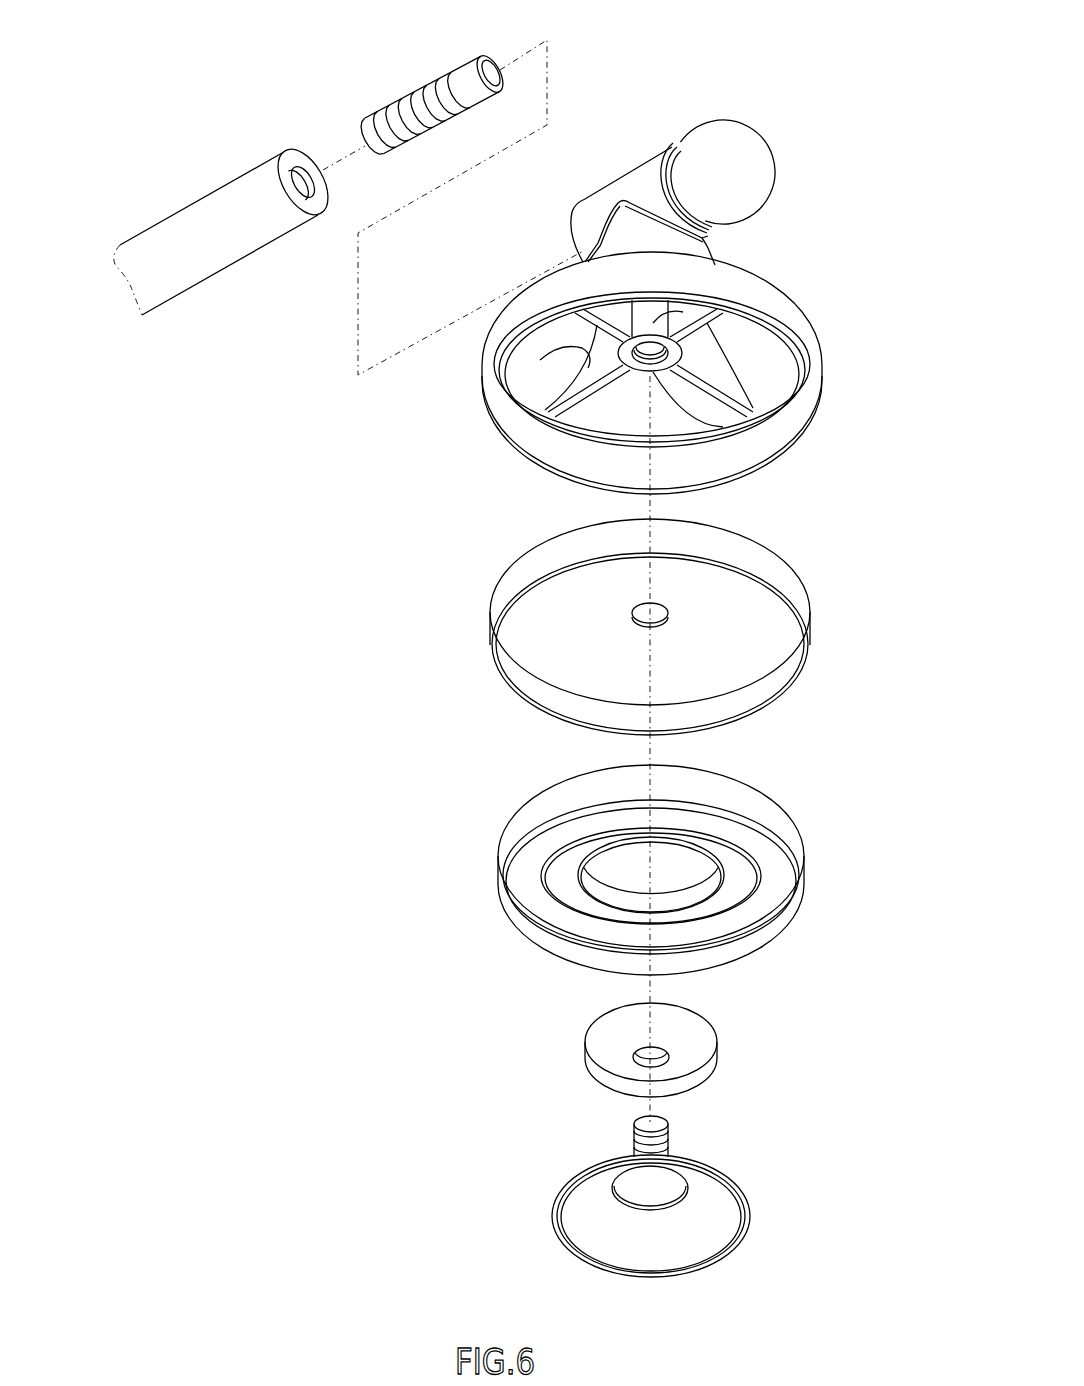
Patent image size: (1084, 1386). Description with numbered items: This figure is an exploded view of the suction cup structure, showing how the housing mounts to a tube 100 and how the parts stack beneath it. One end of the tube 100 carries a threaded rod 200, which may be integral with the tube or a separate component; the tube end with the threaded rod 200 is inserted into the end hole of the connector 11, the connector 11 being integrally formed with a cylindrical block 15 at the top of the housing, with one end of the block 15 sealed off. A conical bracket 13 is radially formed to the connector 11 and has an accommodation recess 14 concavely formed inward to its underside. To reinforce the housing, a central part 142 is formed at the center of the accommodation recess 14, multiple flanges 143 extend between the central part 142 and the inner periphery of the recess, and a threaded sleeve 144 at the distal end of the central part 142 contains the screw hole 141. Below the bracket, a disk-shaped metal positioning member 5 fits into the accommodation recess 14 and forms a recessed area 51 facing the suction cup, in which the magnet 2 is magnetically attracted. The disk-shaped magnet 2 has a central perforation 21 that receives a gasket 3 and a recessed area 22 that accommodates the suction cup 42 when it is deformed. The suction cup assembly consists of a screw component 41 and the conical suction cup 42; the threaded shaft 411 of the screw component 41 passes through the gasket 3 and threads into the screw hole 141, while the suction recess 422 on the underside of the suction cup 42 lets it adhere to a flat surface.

The tube 100 is at (213, 202).
The threaded rod 200 is at (412, 105).
The connector 11 is at (683, 102).
The cylindrical block 15 is at (642, 172).
The conical bracket 13 is at (626, 407).
The accommodation recess 14 is at (534, 470).
The screw hole 141 is at (705, 405).
The central part 142 is at (688, 314).
The flanges 143 is at (578, 350).
The threaded sleeve 144 is at (723, 427).
The positioning member 5 is at (597, 650).
The recessed area 51 is at (525, 696).
The magnet 2 is at (696, 899).
The central perforation 21 is at (703, 885).
The recessed area 22 is at (700, 955).
The gasket 3 is at (717, 1040).
The screw component 41 is at (712, 1231).
The threaded shaft 411 is at (665, 1124).
The suction cup 42 is at (712, 1250).
The suction recess 422 is at (766, 1233).